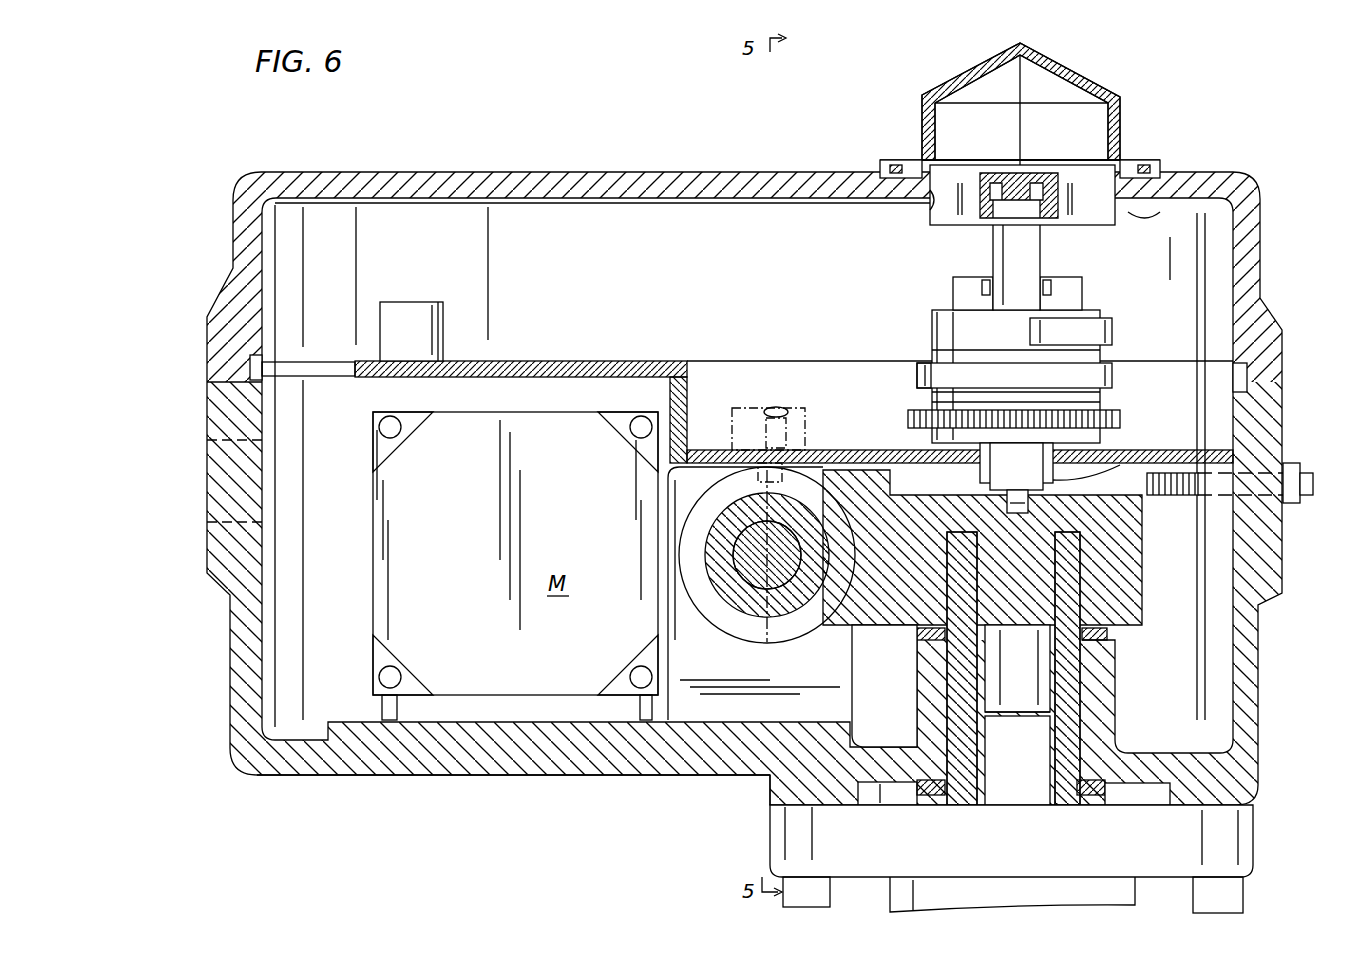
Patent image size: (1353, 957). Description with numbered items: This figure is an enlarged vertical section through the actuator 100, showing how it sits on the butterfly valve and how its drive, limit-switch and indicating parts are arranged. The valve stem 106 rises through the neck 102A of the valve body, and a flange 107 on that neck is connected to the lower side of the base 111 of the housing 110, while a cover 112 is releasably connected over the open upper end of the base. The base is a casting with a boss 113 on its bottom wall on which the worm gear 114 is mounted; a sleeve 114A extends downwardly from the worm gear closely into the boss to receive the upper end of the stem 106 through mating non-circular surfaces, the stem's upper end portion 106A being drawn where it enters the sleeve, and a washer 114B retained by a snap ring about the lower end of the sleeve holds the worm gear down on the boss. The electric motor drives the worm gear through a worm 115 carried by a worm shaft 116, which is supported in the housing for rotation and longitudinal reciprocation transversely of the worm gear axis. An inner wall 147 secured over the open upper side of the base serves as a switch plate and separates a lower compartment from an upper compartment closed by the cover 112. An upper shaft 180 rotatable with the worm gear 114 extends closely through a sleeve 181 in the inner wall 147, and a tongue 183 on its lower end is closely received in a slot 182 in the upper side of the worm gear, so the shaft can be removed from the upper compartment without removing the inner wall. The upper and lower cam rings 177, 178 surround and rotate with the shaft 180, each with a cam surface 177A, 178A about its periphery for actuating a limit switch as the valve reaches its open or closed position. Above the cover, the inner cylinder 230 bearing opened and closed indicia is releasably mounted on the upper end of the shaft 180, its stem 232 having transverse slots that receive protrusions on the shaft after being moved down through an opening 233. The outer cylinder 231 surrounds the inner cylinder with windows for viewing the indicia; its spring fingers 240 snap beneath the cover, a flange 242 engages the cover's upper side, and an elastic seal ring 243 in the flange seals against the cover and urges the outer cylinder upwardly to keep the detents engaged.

The actuator 100 is at (232, 667).
The neck of the valve body 102A is at (1140, 900).
The stem 106 is at (963, 778).
The base plate bore sleeve 106A is at (1043, 773).
The flange 107 is at (770, 828).
The housing 110 is at (527, 778).
The base 111 is at (1258, 650).
The cover 112 is at (1265, 252).
The boss 113 is at (917, 695).
The worm gear 114 is at (1132, 565).
The sleeve 114A is at (1083, 725).
The washer 114B is at (1085, 790).
The worm 115 is at (790, 640).
The worm shaft 116 is at (745, 583).
The inner wall 147 is at (857, 448).
The upper cam ring 177 is at (1115, 337).
The cam surface 177A is at (1058, 320).
The lower cam ring 178 is at (1115, 380).
The cam surface 178A is at (918, 375).
The upper shaft 180 is at (1043, 245).
The sleeve 181 is at (1130, 455).
The slot 182 is at (990, 495).
The tongue 183 is at (1128, 518).
The inner cylinder 230 is at (1040, 104).
The outer cylinder 231 is at (963, 77).
The stem 232 is at (982, 207).
The opening 233 is at (920, 213).
The spring fingers 240 is at (1160, 200).
The flange 242 is at (1145, 165).
The elastic seal ring 243 is at (880, 170).